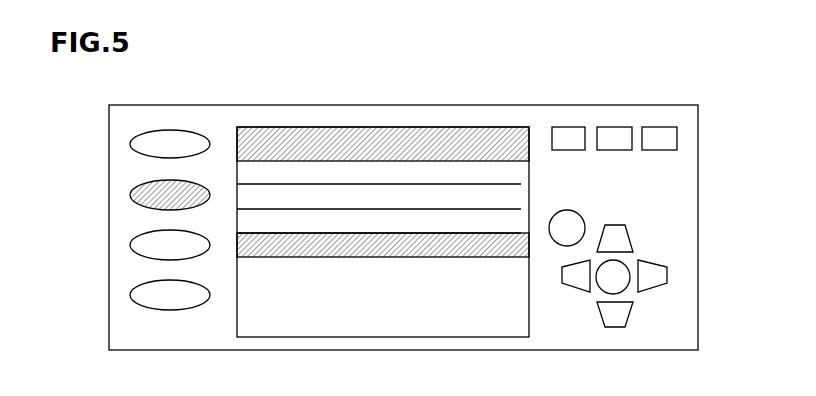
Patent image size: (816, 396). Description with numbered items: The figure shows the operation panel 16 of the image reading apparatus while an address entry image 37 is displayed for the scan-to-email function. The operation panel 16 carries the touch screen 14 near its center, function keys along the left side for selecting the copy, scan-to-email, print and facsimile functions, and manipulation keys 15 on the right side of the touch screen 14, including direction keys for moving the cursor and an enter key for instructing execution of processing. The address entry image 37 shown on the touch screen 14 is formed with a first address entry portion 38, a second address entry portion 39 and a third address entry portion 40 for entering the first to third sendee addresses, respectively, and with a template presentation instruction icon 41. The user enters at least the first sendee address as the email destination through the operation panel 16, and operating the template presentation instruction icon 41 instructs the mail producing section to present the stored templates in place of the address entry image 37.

The touch screen 14 is at (415, 230).
The manipulation keys 15 is at (414, 234).
The operation panel 16 is at (615, 103).
The address entry image 37 is at (415, 230).
The first address entry portion 38 is at (437, 172).
The second address entry portion 39 is at (462, 195).
The third address entry portion 40 is at (484, 220).
The template presentation instruction icon 41 is at (330, 262).